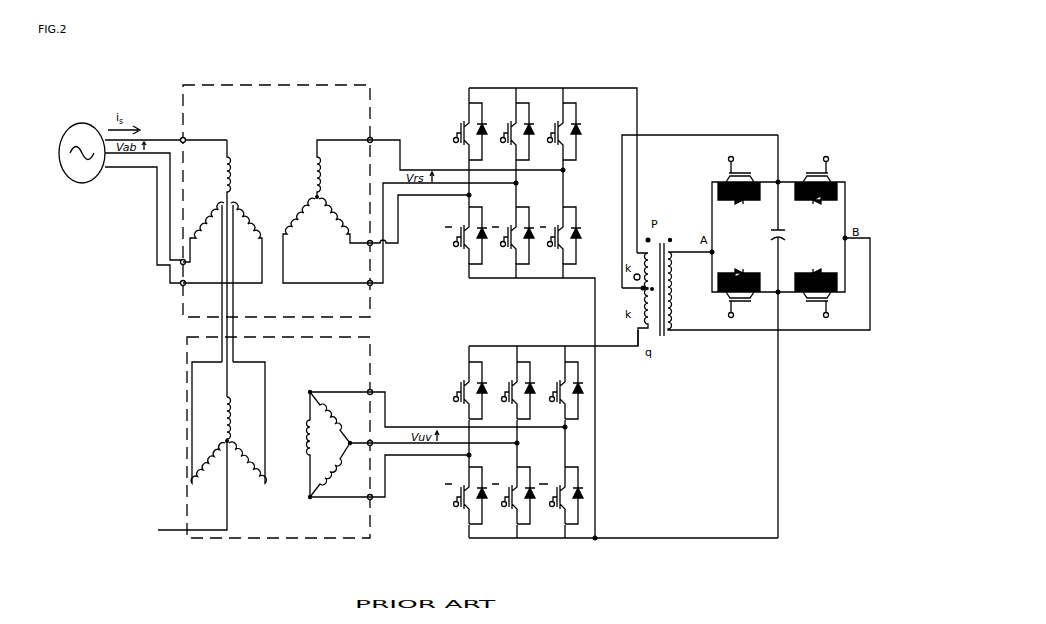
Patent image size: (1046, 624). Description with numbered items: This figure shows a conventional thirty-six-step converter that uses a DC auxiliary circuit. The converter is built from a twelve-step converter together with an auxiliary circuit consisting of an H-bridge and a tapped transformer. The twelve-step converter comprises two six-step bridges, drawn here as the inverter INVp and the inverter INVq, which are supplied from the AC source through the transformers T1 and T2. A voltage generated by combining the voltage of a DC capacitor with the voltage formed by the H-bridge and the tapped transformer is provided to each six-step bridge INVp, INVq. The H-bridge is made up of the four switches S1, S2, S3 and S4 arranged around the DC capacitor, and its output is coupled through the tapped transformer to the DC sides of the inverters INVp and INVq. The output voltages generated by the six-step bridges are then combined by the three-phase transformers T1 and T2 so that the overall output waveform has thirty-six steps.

The first transformer T1 is at (277, 241).
The second transformer T2 is at (257, 437).
The p-side inverter INVp is at (540, 304).
The q-side inverter INVq is at (611, 447).
The switch S1 is at (816, 299).
The switch S2 is at (739, 178).
The switch S3 is at (739, 299).
The switch S4 is at (816, 178).